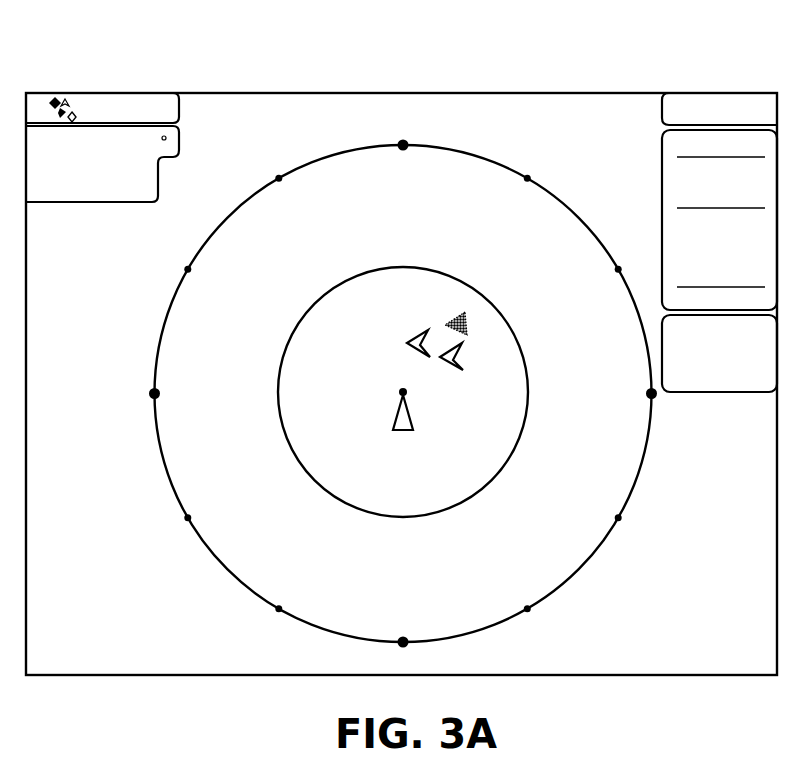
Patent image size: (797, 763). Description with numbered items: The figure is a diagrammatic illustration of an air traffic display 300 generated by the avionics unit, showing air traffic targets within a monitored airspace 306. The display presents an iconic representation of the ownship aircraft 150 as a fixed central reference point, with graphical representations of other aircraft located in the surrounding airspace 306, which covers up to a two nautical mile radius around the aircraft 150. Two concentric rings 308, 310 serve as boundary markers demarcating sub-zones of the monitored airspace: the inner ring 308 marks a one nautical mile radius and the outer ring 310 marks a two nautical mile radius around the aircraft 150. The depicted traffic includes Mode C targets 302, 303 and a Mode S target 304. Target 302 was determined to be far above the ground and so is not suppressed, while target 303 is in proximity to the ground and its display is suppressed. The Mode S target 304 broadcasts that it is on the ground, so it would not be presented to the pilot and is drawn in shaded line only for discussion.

The air traffic display 300 is at (530, 79).
The Mode C target 302 is at (452, 371).
The Mode C target 303 is at (408, 350).
The Mode S target 304 is at (454, 323).
The monitored airspace 306 is at (504, 165).
The concentric ring 308 is at (375, 266).
The concentric ring 310 is at (306, 162).
The aircraft 150 is at (390, 420).